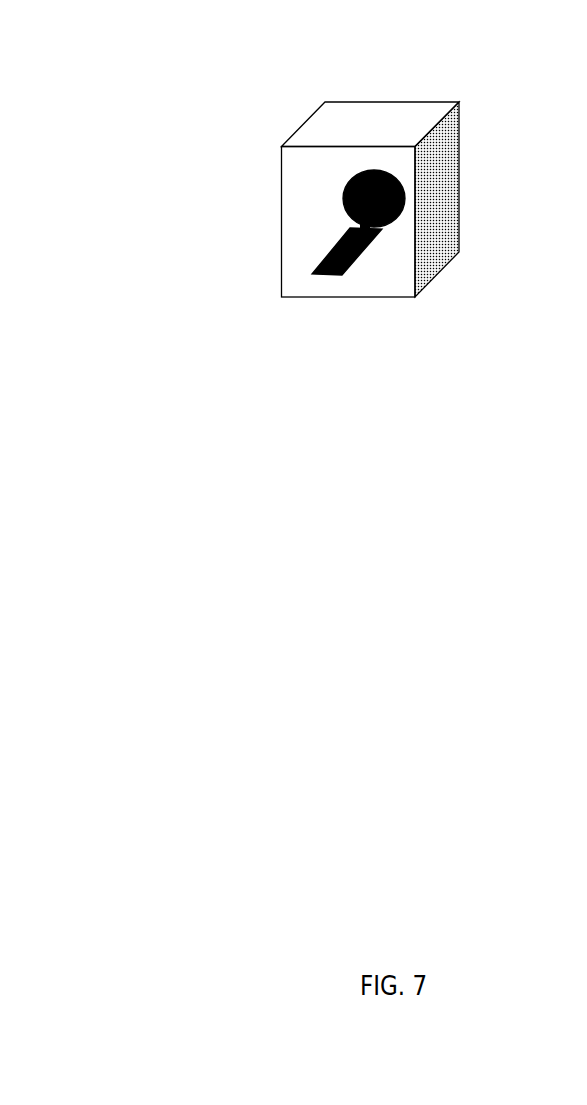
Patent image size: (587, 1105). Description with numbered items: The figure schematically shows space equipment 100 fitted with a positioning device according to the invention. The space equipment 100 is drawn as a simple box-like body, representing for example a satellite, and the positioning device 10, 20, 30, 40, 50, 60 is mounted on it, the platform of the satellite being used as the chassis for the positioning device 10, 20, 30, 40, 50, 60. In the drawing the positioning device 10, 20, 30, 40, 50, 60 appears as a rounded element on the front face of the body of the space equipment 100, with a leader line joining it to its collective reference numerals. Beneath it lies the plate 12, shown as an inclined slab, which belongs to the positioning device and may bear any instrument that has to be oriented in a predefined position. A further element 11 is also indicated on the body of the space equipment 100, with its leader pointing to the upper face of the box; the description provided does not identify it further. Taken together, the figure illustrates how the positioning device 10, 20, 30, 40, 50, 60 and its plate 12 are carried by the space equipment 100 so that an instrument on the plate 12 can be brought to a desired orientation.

The space equipment 100 is at (108, 38).
The housing 11 is at (352, 120).
The positioning device 10 is at (250, 185).
The positioning device 20 is at (250, 185).
The positioning device 30 is at (250, 185).
The positioning device 40 is at (250, 185).
The positioning device 50 is at (250, 185).
The positioning device 60 is at (345, 202).
The plate 12 is at (336, 246).